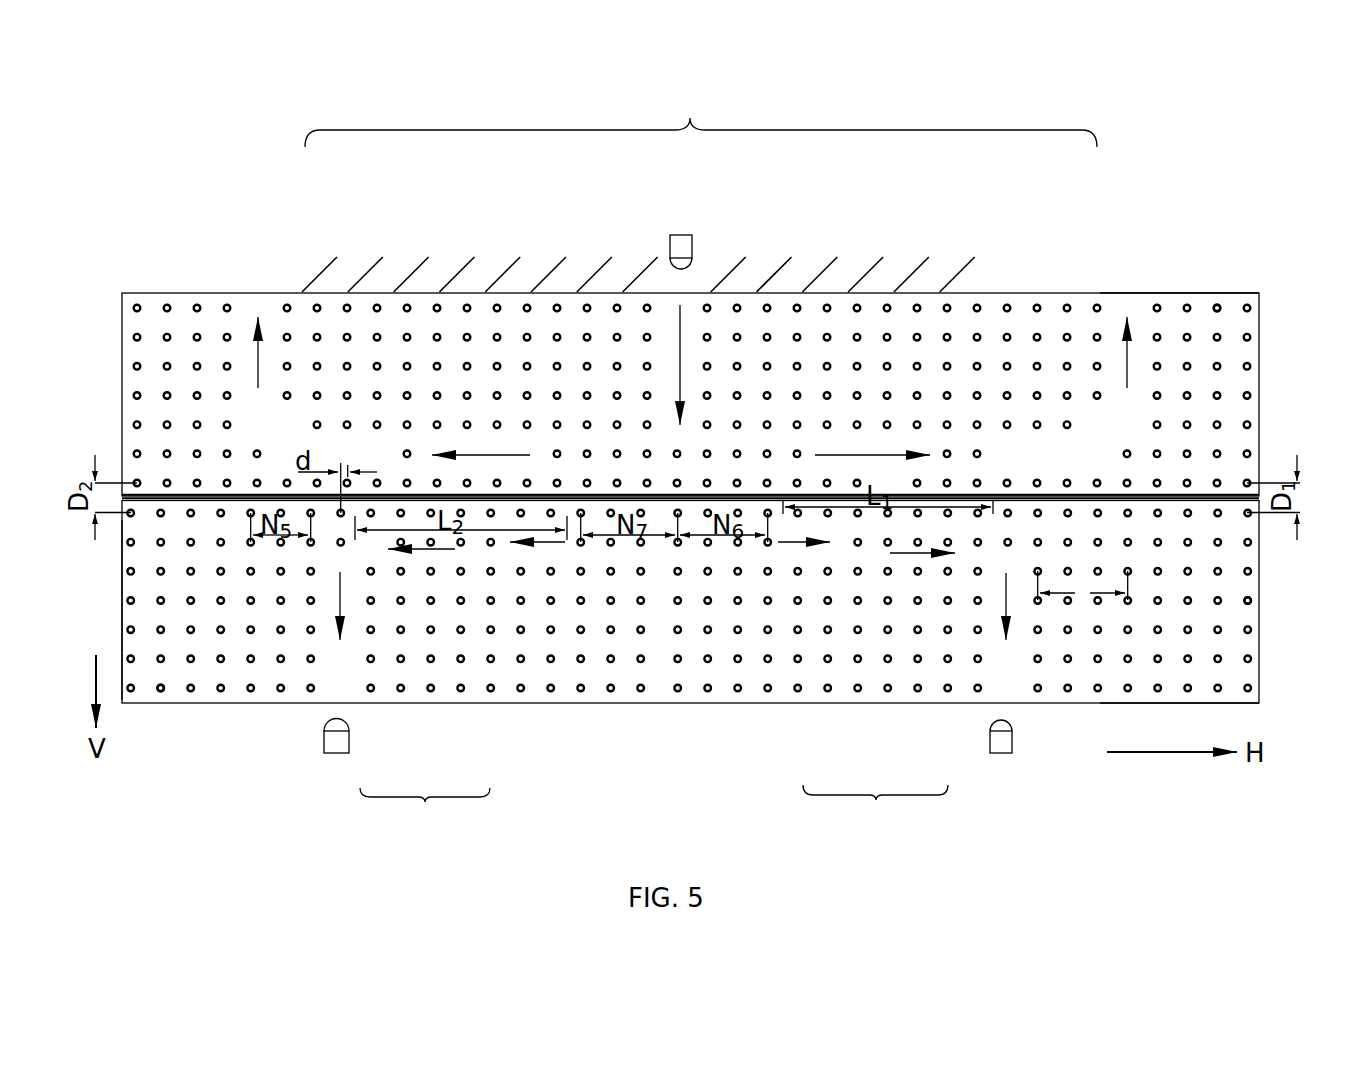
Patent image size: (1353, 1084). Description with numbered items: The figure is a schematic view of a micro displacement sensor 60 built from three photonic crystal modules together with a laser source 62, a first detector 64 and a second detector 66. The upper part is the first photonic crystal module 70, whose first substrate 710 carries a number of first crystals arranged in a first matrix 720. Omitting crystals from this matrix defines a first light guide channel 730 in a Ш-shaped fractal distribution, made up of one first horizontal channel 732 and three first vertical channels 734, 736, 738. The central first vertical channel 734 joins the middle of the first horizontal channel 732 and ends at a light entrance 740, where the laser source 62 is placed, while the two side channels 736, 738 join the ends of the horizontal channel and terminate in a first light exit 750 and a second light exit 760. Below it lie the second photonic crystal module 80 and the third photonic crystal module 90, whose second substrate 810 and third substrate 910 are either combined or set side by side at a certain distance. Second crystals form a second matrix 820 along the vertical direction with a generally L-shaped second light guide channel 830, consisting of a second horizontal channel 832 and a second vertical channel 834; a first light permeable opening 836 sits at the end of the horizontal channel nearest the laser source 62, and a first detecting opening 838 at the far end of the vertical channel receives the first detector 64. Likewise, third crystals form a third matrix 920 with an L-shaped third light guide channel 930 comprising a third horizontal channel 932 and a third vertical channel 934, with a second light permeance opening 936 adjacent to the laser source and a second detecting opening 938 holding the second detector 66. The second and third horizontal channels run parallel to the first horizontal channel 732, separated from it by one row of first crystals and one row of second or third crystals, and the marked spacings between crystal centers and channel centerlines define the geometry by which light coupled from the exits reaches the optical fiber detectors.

The micro displacement sensor 60 is at (886, 92).
The laser source 62 is at (680, 247).
The first detector 64 is at (998, 742).
The second detector 66 is at (339, 742).
The first photonic crystal module 70 is at (1267, 394).
The second photonic crystal module 80 is at (1267, 643).
The third photonic crystal module 90 is at (112, 642).
The first substrate 710 is at (1248, 326).
The first matrix 720 is at (1218, 305).
The first light guide channel 730 is at (701, 116).
The first horizontal channel 732 is at (877, 445).
The central first vertical channel 734 is at (663, 330).
The first vertical channel 736 is at (272, 332).
The first vertical channel 738 is at (1115, 318).
The light entrance 740 is at (694, 281).
The first light exit 750 is at (256, 280).
The second light exit 760 is at (1128, 291).
The second substrate 810 is at (1248, 683).
The second matrix 820 is at (1248, 599).
The second light guide channel 830 is at (875, 806).
The second horizontal channel 832 is at (866, 548).
The second vertical channel 834 is at (988, 660).
The first light permeable opening 836 is at (707, 483).
The first detecting opening 838 is at (1013, 706).
The third substrate 910 is at (133, 584).
The third matrix 920 is at (161, 691).
The third light guide channel 930 is at (425, 807).
The third horizontal channel 932 is at (477, 555).
The third vertical channel 934 is at (352, 655).
The second light permeance opening 936 is at (627, 483).
The second detecting opening 938 is at (330, 703).